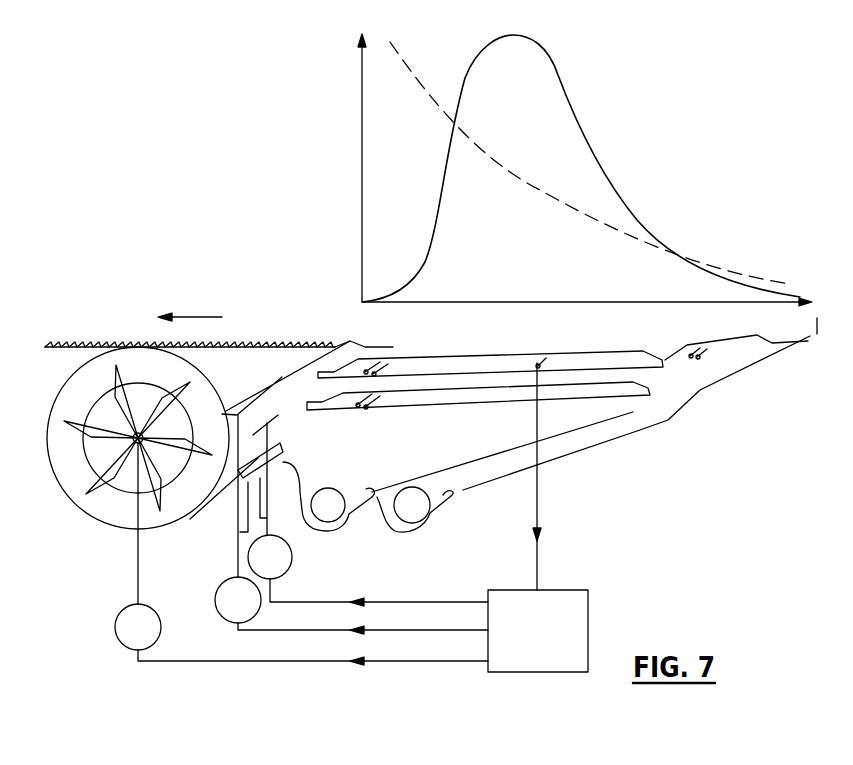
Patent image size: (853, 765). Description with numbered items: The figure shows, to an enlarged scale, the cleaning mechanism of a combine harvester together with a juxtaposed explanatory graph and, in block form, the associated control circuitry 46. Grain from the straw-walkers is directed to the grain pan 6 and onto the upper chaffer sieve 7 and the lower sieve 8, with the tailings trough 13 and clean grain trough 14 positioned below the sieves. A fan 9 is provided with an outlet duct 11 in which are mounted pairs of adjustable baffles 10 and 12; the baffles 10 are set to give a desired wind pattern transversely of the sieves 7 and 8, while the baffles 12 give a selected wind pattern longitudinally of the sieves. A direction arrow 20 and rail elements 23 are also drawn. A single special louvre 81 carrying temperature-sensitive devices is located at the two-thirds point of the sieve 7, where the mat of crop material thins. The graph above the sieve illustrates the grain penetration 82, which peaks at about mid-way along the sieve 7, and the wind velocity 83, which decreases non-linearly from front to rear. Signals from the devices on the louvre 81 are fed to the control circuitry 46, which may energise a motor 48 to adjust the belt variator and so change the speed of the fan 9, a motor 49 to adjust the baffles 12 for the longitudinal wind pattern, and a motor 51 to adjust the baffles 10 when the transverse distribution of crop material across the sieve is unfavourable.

The grain pan 6 is at (243, 348).
The upper chaffer sieve 7 is at (647, 368).
The lower sieve 8 is at (551, 398).
The fan 9 is at (97, 521).
The adjustable baffles 10 is at (271, 392).
The outlet duct 11 is at (198, 518).
The adjustable baffles 12 is at (279, 424).
The tailings trough 13 is at (430, 526).
The clean grain trough 14 is at (345, 527).
The direction of movement 20 is at (201, 303).
The conveyor rail with tines 23 is at (380, 362).
The control circuitry 46 is at (589, 642).
The motor 48 is at (119, 610).
The motor 49 is at (292, 548).
The motor 51 is at (218, 585).
The special louvre 81 is at (541, 362).
The grain penetration 82 is at (562, 86).
The wind velocity 83 is at (518, 178).